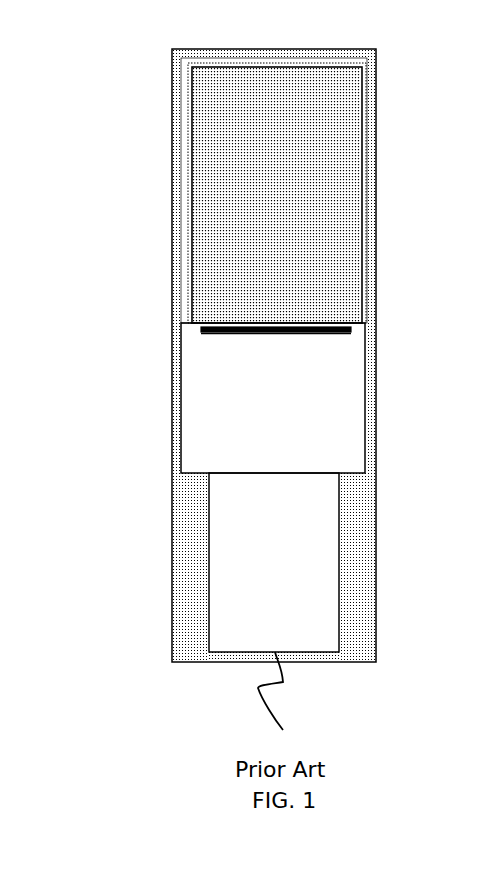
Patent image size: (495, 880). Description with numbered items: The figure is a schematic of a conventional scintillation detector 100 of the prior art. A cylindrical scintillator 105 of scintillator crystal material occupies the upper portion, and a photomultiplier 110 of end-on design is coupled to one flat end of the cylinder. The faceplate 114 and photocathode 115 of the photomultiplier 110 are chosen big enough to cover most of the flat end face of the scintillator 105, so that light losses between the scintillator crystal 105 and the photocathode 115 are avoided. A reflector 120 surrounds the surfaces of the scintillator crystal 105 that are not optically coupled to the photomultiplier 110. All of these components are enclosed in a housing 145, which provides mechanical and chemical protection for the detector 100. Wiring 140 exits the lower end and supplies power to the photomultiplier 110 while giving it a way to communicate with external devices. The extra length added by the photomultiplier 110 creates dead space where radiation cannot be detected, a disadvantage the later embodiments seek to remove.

The conventional scintillation detector 100 is at (264, 382).
The cylindrical scintillator 105 is at (348, 183).
The photomultiplier 110 is at (270, 375).
The faceplate 114 is at (312, 326).
The photocathode 115 is at (320, 333).
The reflector 120 is at (363, 124).
The wiring 140 is at (283, 682).
The housing 145 is at (377, 513).